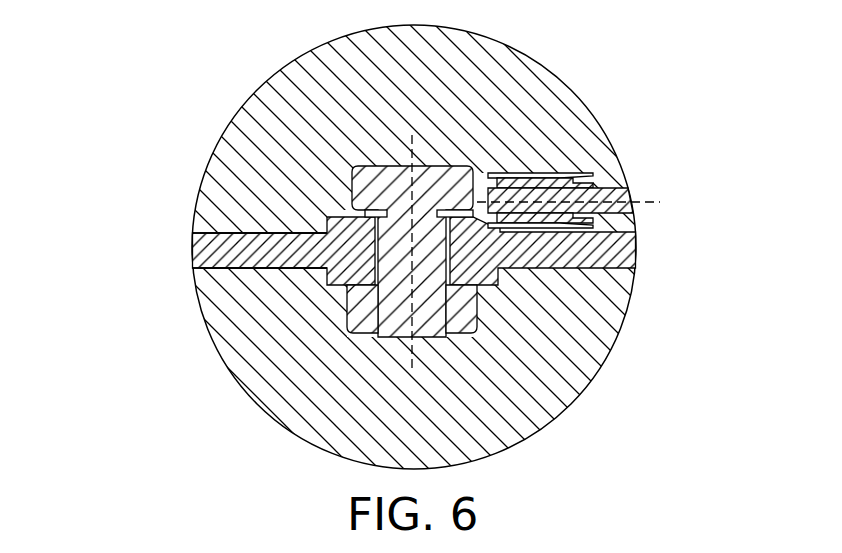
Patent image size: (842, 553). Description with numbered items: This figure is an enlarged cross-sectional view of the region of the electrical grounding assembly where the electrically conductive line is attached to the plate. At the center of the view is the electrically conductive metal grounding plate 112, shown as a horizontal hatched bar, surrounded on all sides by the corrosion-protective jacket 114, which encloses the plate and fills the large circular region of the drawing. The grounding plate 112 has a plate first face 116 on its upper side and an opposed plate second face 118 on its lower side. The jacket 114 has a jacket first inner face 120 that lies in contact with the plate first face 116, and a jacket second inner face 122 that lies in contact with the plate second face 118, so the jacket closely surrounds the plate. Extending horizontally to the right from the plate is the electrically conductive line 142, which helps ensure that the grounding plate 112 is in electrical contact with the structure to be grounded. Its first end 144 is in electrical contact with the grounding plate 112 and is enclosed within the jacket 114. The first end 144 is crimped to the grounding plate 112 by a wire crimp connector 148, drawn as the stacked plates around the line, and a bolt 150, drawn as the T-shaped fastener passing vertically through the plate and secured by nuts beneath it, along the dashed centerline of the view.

The corrosion-protective jacket 114 is at (307, 82).
The grounding plate 112 is at (248, 258).
The jacket first inner face 120 is at (205, 239).
The plate first face 116 is at (230, 232).
The jacket second inner face 122 is at (237, 267).
The plate second face 118 is at (222, 272).
The bolt 150 is at (393, 336).
The wire crimp connector 148 is at (568, 172).
The first end 144 is at (617, 192).
The electrically conductive line 142 is at (610, 213).